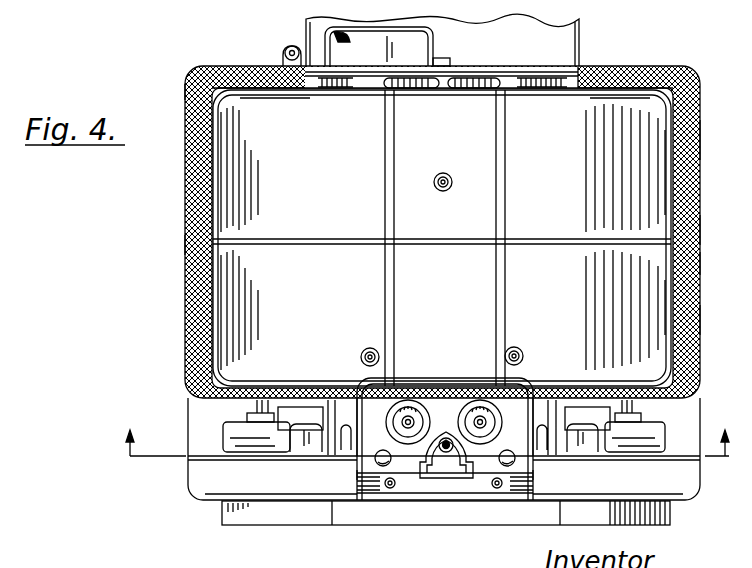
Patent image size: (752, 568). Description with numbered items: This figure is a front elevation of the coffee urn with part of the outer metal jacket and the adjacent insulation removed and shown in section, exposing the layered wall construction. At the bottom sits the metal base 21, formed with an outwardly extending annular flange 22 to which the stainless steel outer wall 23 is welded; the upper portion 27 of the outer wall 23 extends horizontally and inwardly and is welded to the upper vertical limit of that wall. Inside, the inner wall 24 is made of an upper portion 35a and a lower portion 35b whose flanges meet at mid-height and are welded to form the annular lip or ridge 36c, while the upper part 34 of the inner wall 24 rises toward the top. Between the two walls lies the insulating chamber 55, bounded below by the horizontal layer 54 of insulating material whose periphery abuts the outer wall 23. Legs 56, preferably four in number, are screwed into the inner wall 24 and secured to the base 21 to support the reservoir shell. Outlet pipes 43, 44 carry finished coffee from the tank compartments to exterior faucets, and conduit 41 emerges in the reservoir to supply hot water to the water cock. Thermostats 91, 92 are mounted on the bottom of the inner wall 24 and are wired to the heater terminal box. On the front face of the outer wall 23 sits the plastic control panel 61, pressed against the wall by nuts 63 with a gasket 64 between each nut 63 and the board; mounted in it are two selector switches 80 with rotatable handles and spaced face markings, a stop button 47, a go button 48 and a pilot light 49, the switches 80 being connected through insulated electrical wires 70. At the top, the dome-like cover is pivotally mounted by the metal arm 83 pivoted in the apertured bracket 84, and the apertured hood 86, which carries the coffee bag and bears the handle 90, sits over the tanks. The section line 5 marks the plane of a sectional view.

The section line 5- 5 is at (426, 458).
The metal base 21 is at (670, 526).
The annular flange 22 is at (676, 516).
The outer wall 23 is at (700, 262).
The inner wall 24 is at (700, 228).
The upper portion of the outer wall 27 is at (695, 68).
The upper part of the inner wall 34 is at (617, 70).
The upper portion of the inner wall 35a is at (701, 139).
The lower portion of the inner wall 35b is at (700, 318).
The annular lip or ridge 36c is at (187, 244).
The conduit 41 is at (448, 181).
The outlet pipe 43 is at (360, 357).
The outlet pipe 44 is at (522, 357).
The stop button 47 is at (390, 489).
The go button 48 is at (499, 489).
The pilot light 49 is at (448, 478).
The layer of insulating material 54 is at (187, 400).
The insulating chamber 55 is at (186, 92).
The legs 56 is at (327, 457).
The control panel 61 is at (437, 386).
The nut 63 is at (536, 472).
The gasket 64 is at (356, 472).
The electrical wires 70 is at (505, 265).
The electrical selector switch 80 is at (386, 405).
The metal arm or lever 83 is at (293, 46).
The apertured bracket 84 is at (283, 55).
The hood 86 is at (405, 45).
The handle 90 is at (322, 26).
The thermostat 91 is at (230, 437).
The thermostat 92 is at (662, 432).